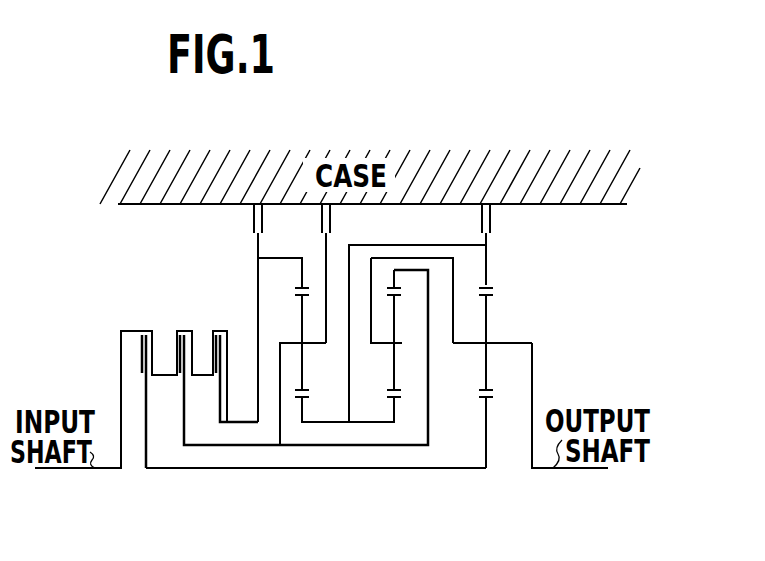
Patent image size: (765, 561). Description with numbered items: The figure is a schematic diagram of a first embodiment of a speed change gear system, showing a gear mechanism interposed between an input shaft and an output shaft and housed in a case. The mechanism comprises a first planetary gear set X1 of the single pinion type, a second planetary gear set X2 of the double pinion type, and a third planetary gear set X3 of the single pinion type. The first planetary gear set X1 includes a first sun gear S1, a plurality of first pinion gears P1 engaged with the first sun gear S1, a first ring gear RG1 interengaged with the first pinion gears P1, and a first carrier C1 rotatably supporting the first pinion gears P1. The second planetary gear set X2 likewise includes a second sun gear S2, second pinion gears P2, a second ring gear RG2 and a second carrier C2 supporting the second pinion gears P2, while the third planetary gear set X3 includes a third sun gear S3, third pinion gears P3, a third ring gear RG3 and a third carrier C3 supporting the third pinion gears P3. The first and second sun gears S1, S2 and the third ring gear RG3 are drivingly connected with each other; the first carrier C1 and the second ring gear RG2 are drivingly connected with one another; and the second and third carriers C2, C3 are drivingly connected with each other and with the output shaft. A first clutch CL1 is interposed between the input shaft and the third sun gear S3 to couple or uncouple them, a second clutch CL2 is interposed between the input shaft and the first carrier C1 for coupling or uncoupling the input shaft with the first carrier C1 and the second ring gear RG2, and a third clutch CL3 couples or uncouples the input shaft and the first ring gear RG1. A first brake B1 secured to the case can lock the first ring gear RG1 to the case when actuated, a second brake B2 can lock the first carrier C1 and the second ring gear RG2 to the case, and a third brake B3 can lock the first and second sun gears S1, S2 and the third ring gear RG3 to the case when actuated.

The first clutch CL1 is at (143, 331).
The second clutch CL2 is at (182, 331).
The third clutch CL3 is at (222, 331).
The first brake B1 is at (242, 313).
The second brake B2 is at (342, 273).
The third brake B3 is at (504, 244).
The first ring gear RG1 is at (298, 270).
The second ring gear RG2 is at (392, 279).
The third ring gear RG3 is at (487, 273).
The first carrier C1 is at (295, 342).
The second carrier C2 is at (388, 343).
The third carrier C3 is at (505, 343).
The first pinion gears P1 is at (303, 367).
The second pinion gears P2 is at (393, 373).
The third pinion gears P3 is at (487, 375).
The first sun gear S1 is at (307, 410).
The second sun gear S2 is at (397, 412).
The third sun gear S3 is at (488, 418).
The first planetary gear set X1 is at (299, 408).
The second planetary gear set X2 is at (390, 408).
The third planetary gear set X3 is at (477, 408).